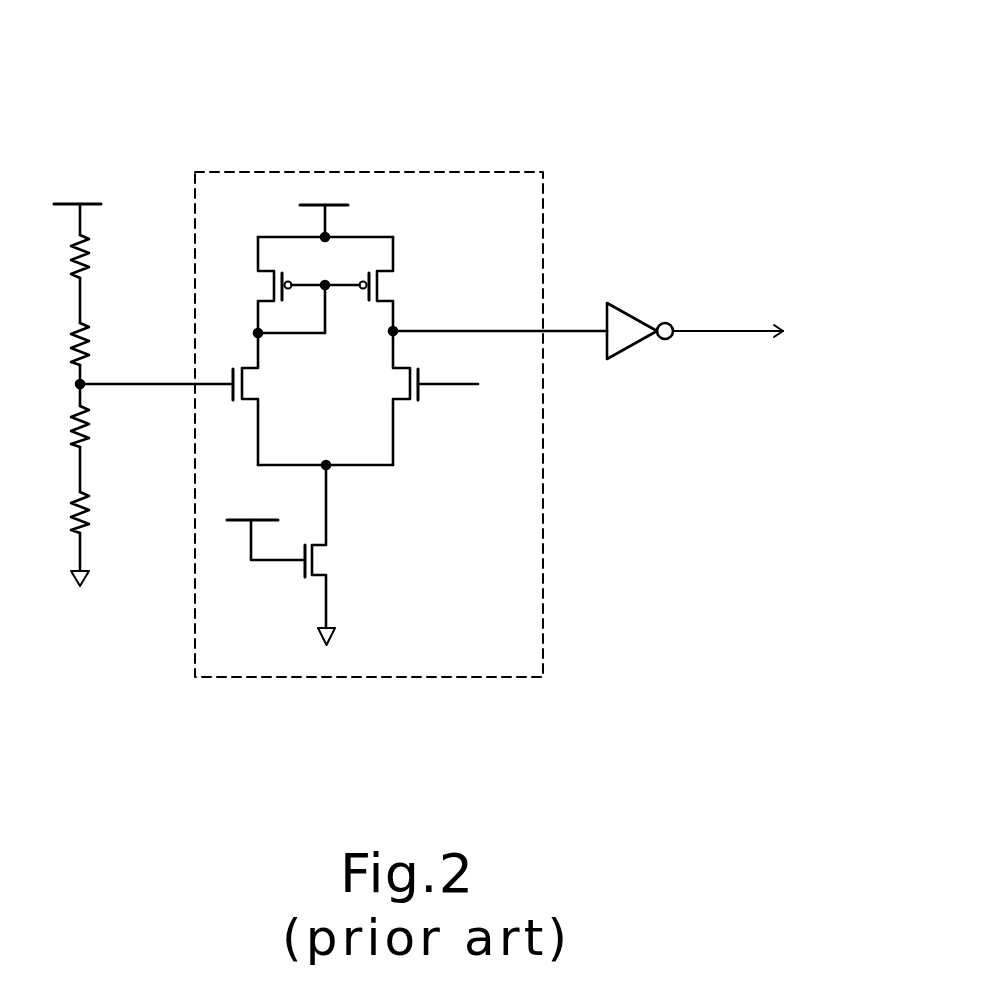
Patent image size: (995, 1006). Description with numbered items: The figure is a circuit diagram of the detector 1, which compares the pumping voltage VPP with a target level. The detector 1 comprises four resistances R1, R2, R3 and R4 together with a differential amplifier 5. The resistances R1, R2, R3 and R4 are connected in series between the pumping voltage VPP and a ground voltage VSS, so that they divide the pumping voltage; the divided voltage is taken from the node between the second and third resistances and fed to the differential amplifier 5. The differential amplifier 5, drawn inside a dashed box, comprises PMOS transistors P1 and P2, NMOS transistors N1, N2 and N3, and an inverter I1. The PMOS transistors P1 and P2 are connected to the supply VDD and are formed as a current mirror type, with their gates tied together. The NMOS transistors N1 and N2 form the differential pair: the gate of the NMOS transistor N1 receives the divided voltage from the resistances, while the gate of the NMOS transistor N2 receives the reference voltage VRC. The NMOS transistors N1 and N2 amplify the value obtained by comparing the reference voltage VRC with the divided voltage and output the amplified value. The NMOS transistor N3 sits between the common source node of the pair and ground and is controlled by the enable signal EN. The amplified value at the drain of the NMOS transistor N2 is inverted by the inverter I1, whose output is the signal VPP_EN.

The detector 1 is at (462, 82).
The differential amplifier 5 is at (543, 172).
The resistance R1 is at (97, 256).
The resistance R2 is at (97, 344).
The resistance R3 is at (97, 426).
The resistance R4 is at (97, 512).
The PMOS transistor P1 is at (277, 285).
The PMOS transistor P2 is at (375, 284).
The NMOS transistor N1 is at (264, 399).
The NMOS transistor N2 is at (418, 398).
The NMOS transistor N3 is at (295, 555).
The inverter I1 is at (640, 317).